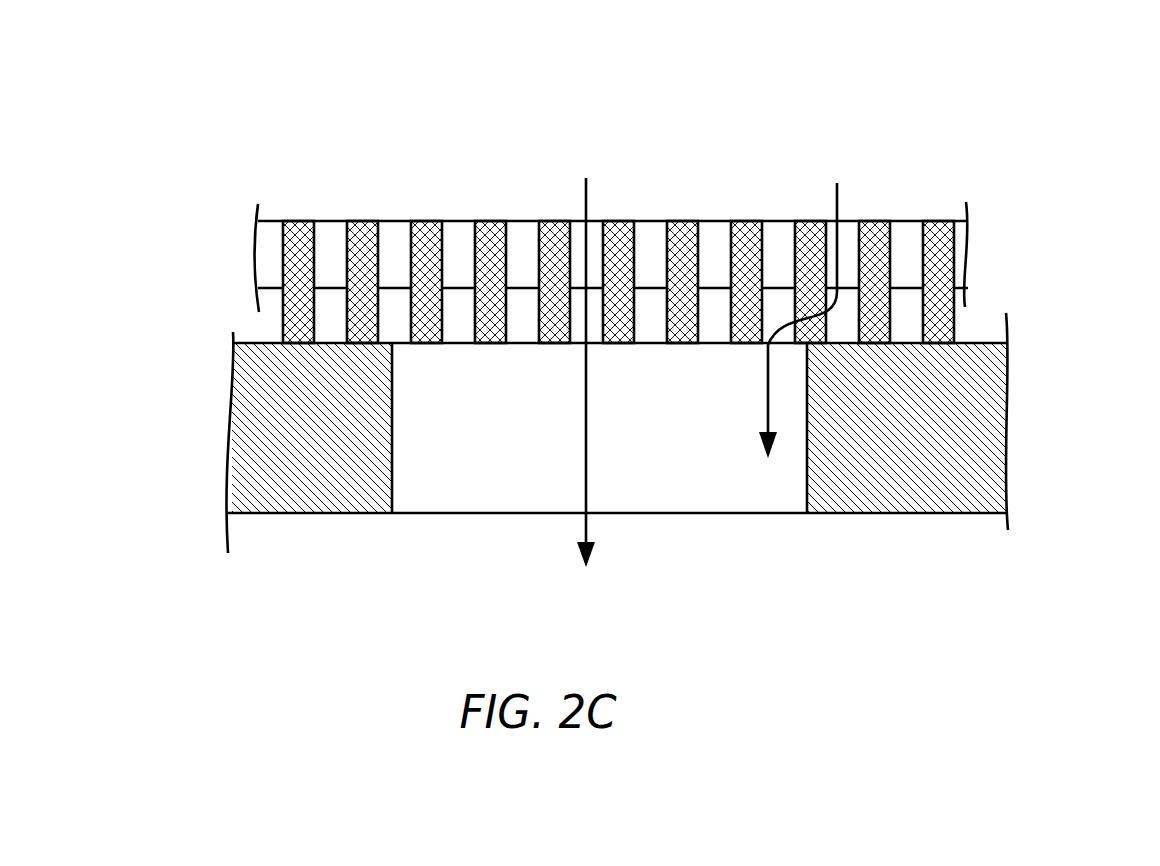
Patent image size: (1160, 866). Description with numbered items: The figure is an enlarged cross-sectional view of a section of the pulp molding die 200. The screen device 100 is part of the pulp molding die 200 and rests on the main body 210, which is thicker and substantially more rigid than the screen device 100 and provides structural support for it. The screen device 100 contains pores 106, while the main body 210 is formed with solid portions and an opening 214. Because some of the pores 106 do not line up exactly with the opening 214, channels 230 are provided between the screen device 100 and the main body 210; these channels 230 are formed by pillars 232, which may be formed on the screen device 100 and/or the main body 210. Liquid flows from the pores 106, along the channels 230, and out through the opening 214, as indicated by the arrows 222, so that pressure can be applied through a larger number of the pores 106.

The pulp molding die 200 is at (592, 70).
The screen device 100 is at (531, 235).
The pore 106 is at (388, 220).
The pillar 232 is at (280, 323).
The channel 230 is at (250, 325).
The main body 210 is at (318, 542).
The opening 214 is at (773, 513).
The arrow 222 is at (768, 395).